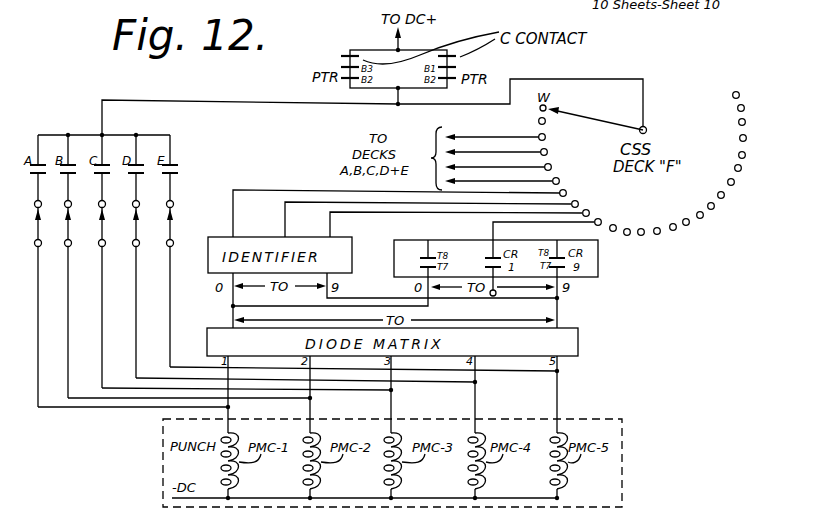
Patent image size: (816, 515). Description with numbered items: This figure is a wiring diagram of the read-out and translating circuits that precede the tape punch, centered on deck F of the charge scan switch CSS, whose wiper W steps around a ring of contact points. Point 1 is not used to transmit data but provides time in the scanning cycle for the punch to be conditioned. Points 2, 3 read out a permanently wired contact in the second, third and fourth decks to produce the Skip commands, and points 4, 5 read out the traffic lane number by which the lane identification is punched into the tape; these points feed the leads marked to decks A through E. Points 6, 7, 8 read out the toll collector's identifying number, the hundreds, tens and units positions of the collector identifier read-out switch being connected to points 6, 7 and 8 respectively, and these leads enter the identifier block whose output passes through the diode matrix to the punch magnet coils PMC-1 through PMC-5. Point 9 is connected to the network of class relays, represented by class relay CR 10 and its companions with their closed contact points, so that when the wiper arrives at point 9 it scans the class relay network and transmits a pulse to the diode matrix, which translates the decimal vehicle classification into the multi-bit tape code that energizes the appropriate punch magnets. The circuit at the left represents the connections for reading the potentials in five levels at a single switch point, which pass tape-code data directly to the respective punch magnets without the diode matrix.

The first point of the charge scan switch 1 is at (547, 122).
The second point of the charge scan switch 2 is at (548, 138).
The third point of the charge scan switch 3 is at (550, 153).
The fourth point of the charge scan switch 4 is at (554, 167).
The fifth point of the charge scan switch 5 is at (562, 180).
The sixth point of the charge scan switch 6 is at (569, 192).
The seventh point of the charge scan switch 7 is at (580, 202).
The eighth point of the charge scan switch 8 is at (591, 210).
The ninth point of the charge scan switch 9 is at (602, 218).
The class relay CR10 10 is at (417, 258).